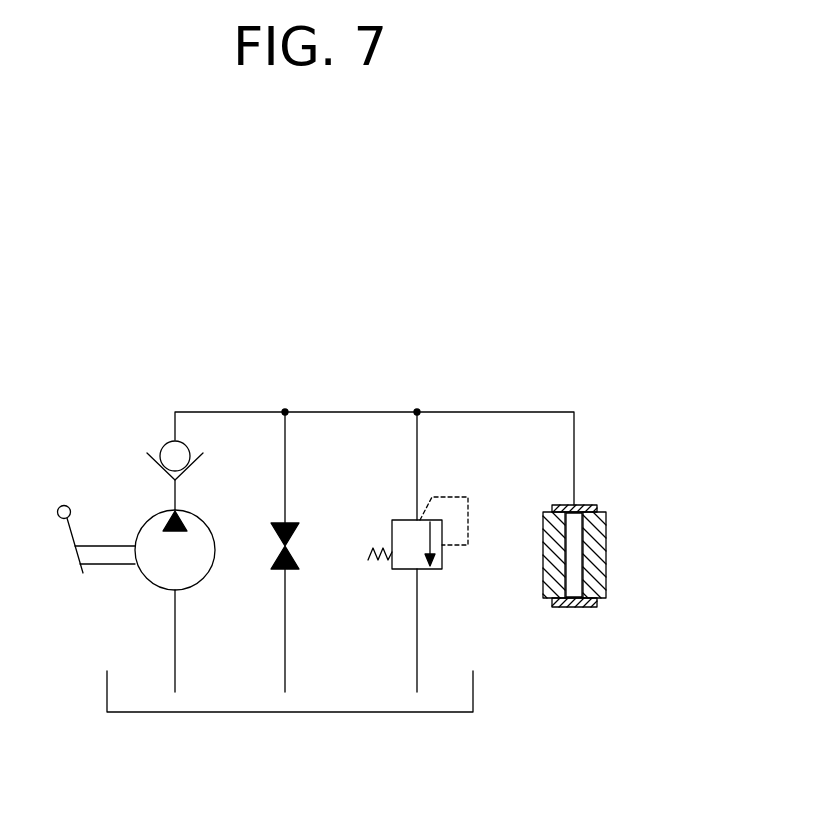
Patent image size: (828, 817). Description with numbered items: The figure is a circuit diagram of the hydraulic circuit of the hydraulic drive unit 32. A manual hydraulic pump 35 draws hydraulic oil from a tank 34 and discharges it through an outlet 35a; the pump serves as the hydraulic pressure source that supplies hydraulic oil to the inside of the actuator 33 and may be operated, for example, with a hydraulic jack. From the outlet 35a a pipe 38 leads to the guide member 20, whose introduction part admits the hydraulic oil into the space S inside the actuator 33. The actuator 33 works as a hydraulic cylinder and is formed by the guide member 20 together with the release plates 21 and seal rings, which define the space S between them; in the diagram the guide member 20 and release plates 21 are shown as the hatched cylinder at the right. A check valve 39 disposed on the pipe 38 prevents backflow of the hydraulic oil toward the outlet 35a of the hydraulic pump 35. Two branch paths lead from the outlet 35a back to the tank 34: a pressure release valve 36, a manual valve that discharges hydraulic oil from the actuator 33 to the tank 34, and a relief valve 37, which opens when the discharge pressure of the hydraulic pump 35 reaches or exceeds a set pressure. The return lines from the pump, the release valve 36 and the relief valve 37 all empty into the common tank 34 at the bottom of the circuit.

The hydraulic drive unit 32 is at (138, 349).
The pipe 38 is at (228, 411).
The check valve 39 is at (161, 440).
The hydraulic pump 35 is at (148, 521).
The outlet 35a is at (178, 508).
The pressure release valve 36 is at (287, 523).
The relief valve 37 is at (410, 576).
The tank 34 is at (337, 715).
The actuator 33 is at (607, 538).
The guide member 20 is at (577, 504).
The release plates 21 is at (553, 568).
The space S is at (573, 578).